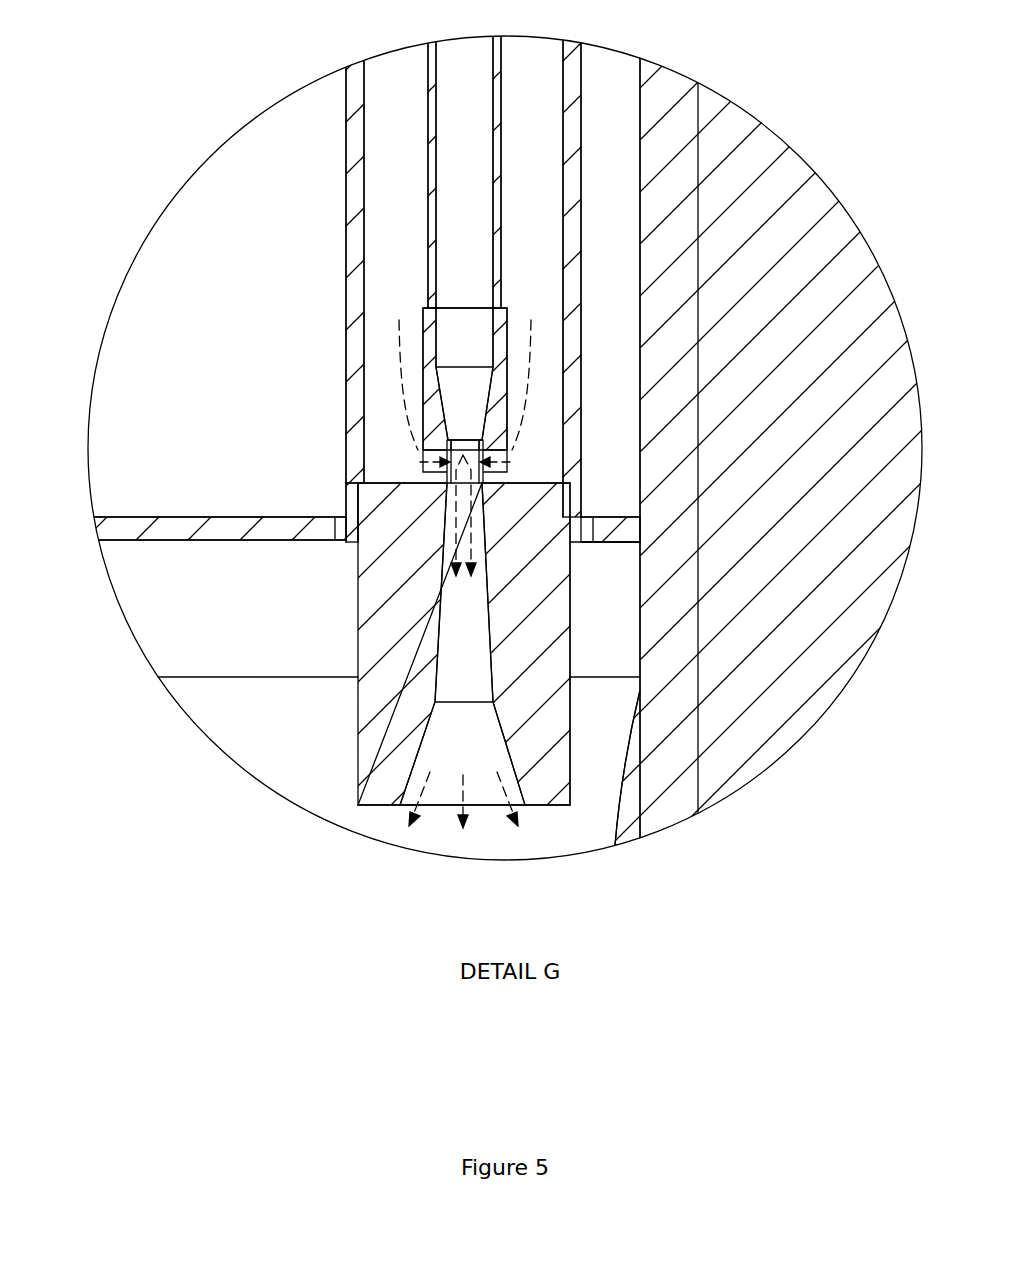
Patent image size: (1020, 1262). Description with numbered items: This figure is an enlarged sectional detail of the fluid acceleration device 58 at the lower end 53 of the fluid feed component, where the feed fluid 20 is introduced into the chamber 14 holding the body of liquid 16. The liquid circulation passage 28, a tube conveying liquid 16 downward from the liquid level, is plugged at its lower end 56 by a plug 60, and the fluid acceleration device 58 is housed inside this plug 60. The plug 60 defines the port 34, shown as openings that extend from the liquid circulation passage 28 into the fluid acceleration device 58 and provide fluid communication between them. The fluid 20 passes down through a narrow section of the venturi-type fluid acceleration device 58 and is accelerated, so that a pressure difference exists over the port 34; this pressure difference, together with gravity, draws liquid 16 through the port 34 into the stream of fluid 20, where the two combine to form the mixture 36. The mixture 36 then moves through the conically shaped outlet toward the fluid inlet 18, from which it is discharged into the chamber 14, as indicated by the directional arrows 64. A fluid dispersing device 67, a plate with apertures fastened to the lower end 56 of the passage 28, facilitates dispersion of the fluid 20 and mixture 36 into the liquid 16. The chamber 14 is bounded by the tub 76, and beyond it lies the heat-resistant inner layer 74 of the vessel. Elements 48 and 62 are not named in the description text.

The chamber 14 is at (130, 367).
The body of liquid 16 is at (199, 241).
The fluid inlet 18 is at (560, 830).
The fluid 20 is at (448, 116).
The liquid circulation passage 28 is at (356, 344).
The port 34 is at (440, 473).
The mixture 36 is at (449, 748).
The tube wall 48 is at (500, 63).
The lower end 53 is at (252, 344).
The lower end of the liquid circulation passage 56 is at (312, 442).
The fluid acceleration device 58 is at (488, 572).
The plug 60 is at (570, 565).
The fluid flow 62 is at (398, 338).
The directional arrows 64 is at (463, 641).
The fluid dispersing device 67 is at (271, 530).
The inner layer 74 is at (740, 745).
The tub 76 is at (648, 817).